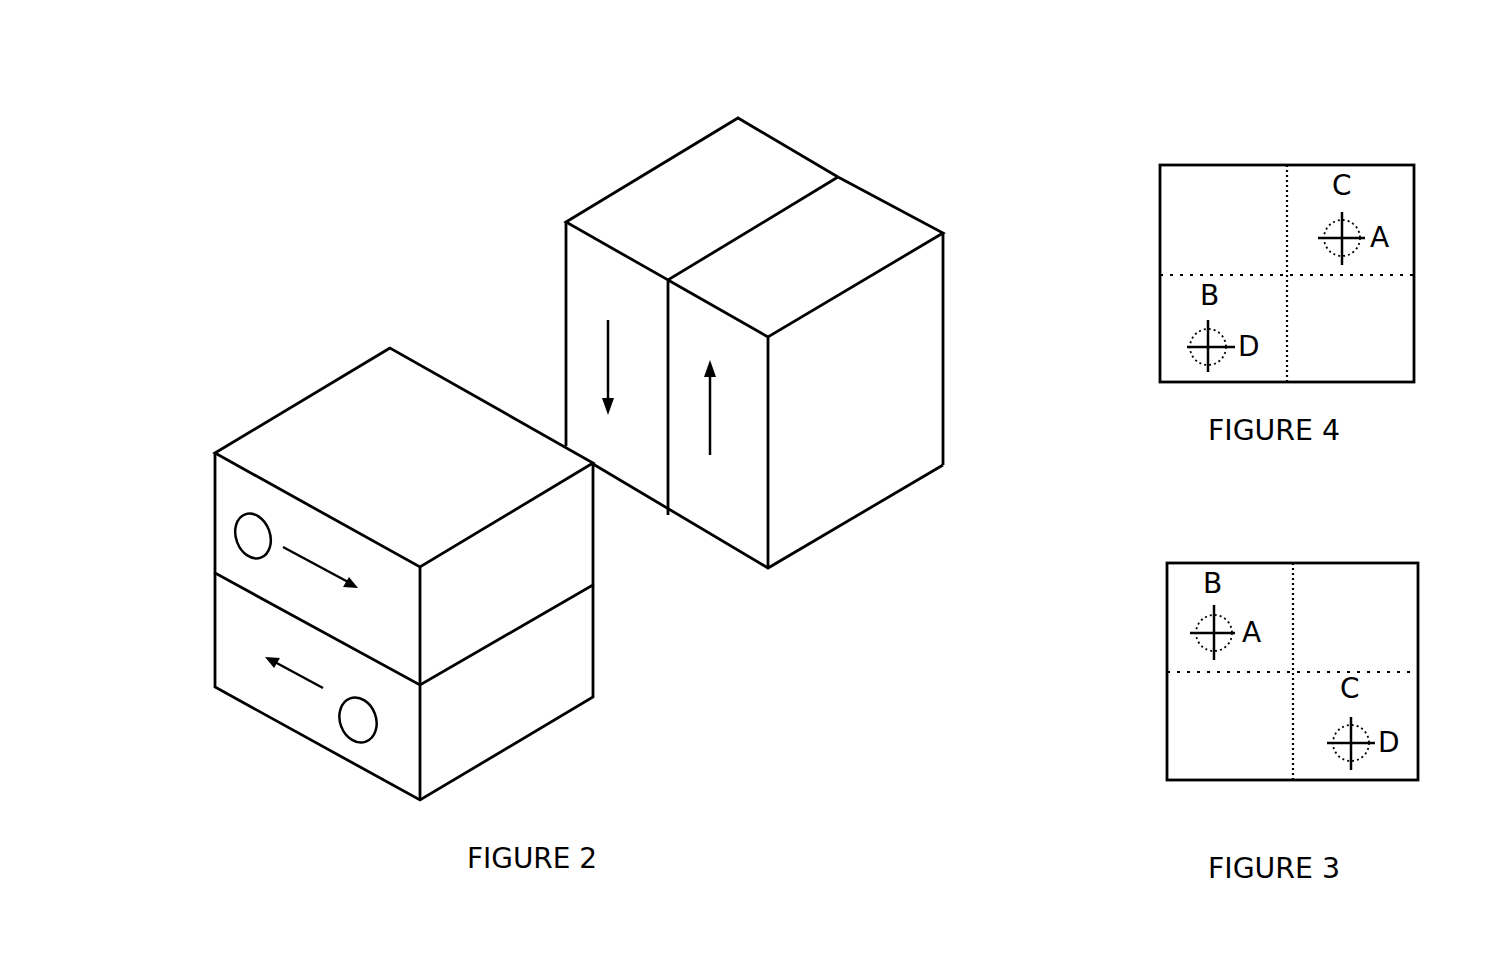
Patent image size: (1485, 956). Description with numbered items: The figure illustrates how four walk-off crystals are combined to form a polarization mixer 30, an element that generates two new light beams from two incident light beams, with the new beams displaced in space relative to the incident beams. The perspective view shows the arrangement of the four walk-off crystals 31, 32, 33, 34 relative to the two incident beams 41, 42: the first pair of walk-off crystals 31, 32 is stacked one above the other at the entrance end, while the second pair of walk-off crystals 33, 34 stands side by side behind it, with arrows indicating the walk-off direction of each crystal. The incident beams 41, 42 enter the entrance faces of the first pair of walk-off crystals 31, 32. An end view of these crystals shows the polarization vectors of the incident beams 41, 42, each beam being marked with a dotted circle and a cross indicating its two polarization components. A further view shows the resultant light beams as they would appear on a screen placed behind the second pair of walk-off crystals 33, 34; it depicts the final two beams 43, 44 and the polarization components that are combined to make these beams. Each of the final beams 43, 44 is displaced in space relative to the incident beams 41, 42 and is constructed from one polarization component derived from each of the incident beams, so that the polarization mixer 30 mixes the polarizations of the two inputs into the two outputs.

In FIG. 2, the polarization mixer 30 is at (340, 189).
In FIG. 2, the walk-off crystal 31 is at (595, 652).
In FIG. 2, the walk-off crystal 32 is at (595, 555).
In FIG. 2, the walk-off crystal 33 is at (923, 222).
In FIG. 2, the walk-off crystal 34 is at (823, 163).
In FIG. 2, the incident beam 41 is at (240, 513).
In FIG. 3, the incident beam 41 is at (1200, 643).
In FIG. 2, the incident beam 42 is at (367, 745).
In FIG. 3, the incident beam 42 is at (1360, 757).
In FIG. 4, the final beam 43 is at (1202, 358).
In FIG. 4, the final beam 44 is at (1353, 230).